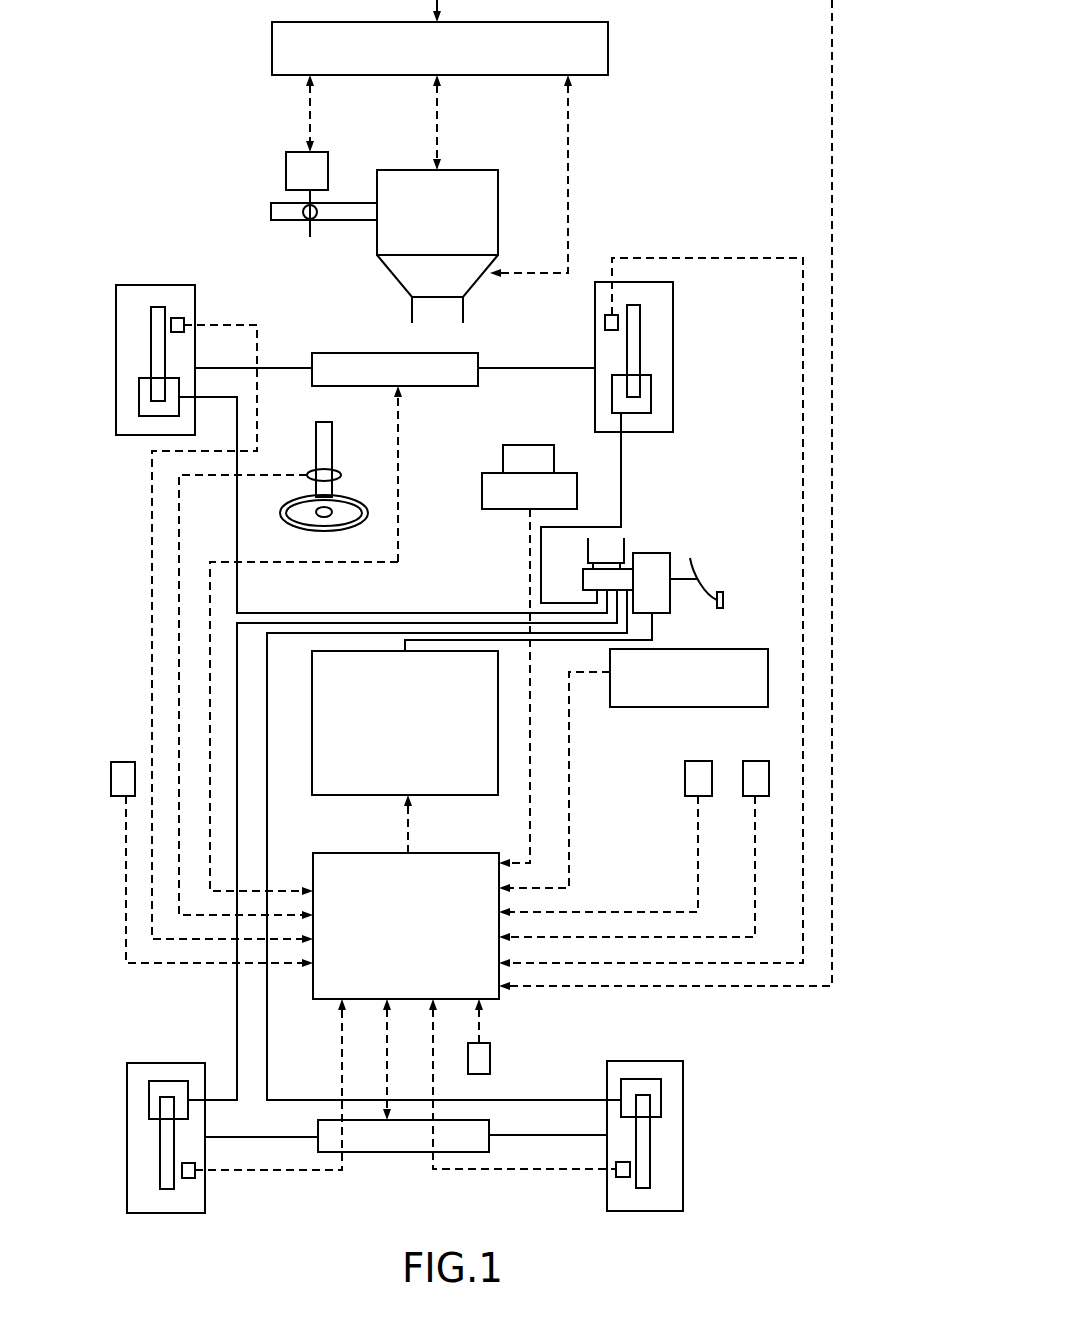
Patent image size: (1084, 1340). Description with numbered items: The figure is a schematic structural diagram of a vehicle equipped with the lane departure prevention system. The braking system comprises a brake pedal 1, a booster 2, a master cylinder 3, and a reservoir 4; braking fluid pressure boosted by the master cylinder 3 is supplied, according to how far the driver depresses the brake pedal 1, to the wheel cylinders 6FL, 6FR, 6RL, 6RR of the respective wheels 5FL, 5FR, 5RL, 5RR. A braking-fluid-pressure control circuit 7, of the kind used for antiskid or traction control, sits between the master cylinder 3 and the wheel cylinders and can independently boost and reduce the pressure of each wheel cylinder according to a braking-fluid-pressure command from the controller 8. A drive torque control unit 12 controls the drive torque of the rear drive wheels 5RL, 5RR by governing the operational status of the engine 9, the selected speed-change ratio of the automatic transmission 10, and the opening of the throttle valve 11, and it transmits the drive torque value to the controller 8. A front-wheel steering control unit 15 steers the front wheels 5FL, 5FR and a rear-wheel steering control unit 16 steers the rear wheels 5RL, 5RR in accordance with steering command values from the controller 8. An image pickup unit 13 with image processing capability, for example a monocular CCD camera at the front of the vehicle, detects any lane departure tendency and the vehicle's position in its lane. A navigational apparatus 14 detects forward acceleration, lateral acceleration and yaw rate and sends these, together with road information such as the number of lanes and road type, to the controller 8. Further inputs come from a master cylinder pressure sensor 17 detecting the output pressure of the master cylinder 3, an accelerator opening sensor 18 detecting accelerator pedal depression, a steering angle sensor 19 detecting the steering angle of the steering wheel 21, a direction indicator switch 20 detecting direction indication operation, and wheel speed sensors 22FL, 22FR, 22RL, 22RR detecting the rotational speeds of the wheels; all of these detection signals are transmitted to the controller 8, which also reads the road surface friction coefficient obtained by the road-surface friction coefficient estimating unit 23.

The brake pedal 1 is at (723, 600).
The booster 2 is at (670, 600).
The master cylinder 3 is at (583, 580).
The reservoir 4 is at (588, 548).
The front left wheel 5FL is at (195, 300).
The front right wheel 5FR is at (673, 322).
The rear left wheel 5RL is at (167, 1063).
The rear right wheel 5RR is at (640, 1061).
The front left wheel cylinder 6FL is at (139, 396).
The front right wheel cylinder 6FR is at (651, 395).
The rear left wheel cylinder 6RL is at (149, 1100).
The rear right wheel cylinder 6RR is at (661, 1100).
The braking-fluid-pressure control circuit 7 is at (312, 718).
The controller 8 is at (330, 853).
The engine 9 is at (475, 170).
The automatic transmission 10 is at (380, 261).
The throttle valve 11 is at (300, 228).
The drive torque control unit 12 is at (608, 58).
The image pickup unit 13 is at (577, 483).
The navigational apparatus 14 is at (632, 708).
The front-wheel steering control unit 15 is at (447, 386).
The rear-wheel steering control unit 16 is at (489, 1128).
The master cylinder pressure sensor 17 is at (693, 758).
The accelerator opening sensor 18 is at (751, 758).
The steering angle sensor 19 is at (341, 475).
The direction indicator switch 20 is at (490, 1058).
The steering wheel 21 is at (287, 519).
The front left wheel speed sensor 22FL is at (184, 332).
The front right wheel speed sensor 22FR is at (605, 323).
The rear left wheel speed sensor 22RL is at (195, 1172).
The rear right wheel speed sensor 22RR is at (616, 1172).
The road-surface friction coefficient estimating unit 23 is at (124, 762).